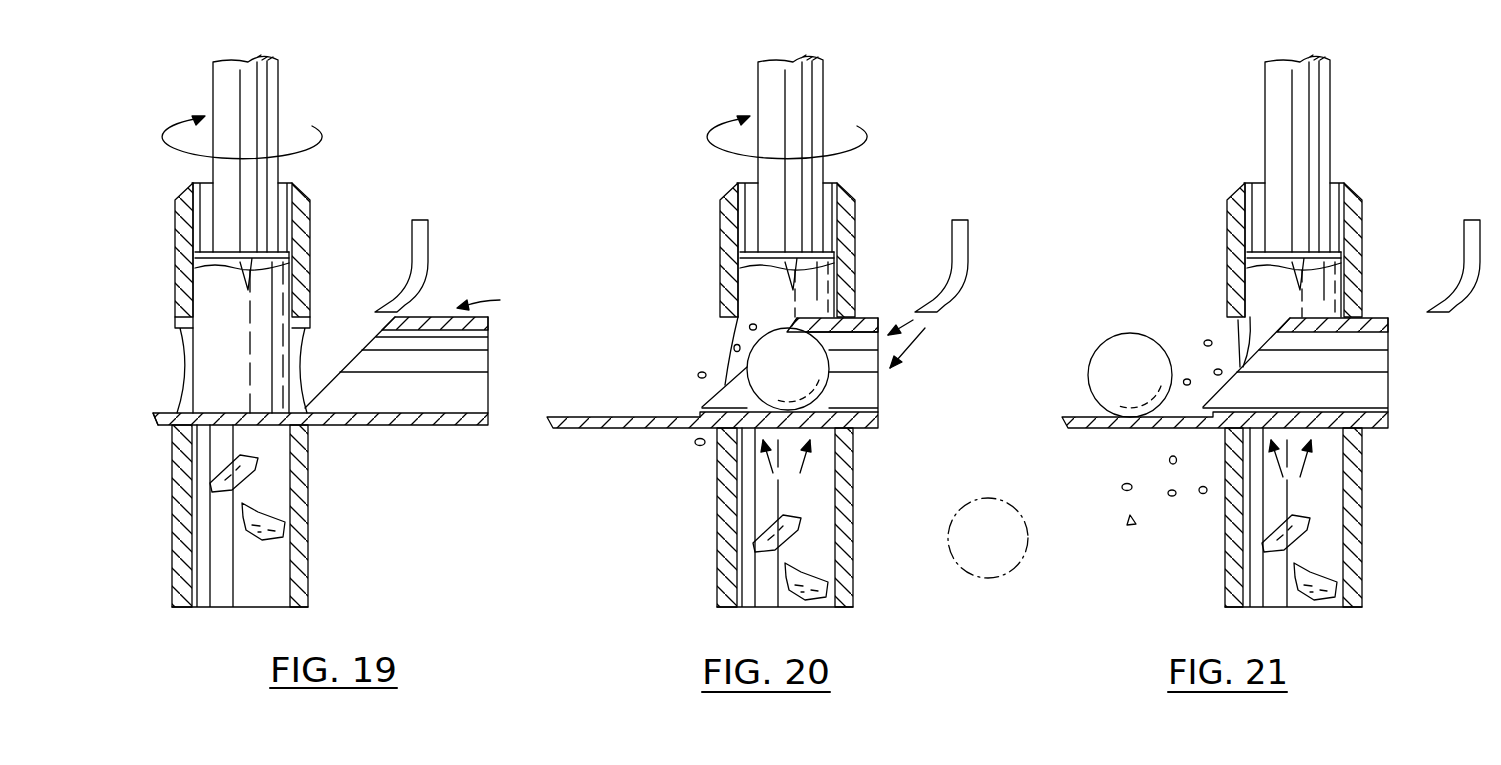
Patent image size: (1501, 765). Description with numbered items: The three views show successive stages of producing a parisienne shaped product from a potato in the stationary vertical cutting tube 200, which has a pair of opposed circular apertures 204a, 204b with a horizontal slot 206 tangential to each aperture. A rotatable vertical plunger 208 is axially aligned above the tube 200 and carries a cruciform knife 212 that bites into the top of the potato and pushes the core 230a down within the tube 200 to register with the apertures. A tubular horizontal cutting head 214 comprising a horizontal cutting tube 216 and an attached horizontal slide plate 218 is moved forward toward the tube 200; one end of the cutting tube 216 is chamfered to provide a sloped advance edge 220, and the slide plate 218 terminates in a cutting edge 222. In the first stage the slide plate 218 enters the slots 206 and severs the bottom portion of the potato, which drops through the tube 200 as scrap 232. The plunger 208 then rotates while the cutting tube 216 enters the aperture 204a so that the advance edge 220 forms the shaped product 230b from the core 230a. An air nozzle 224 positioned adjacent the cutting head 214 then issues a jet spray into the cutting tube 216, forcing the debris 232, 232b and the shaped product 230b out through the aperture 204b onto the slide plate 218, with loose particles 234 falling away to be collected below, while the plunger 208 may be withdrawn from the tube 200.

In FIG. 19, the stationary vertical cutting tube 200 is at (182, 530).
In FIG. 20, the stationary vertical cutting tube 200 is at (741, 517).
In FIG. 21, the stationary vertical cutting tube 200 is at (1332, 517).
In FIG. 19, the aperture 204a is at (306, 318).
In FIG. 19, the aperture 204b is at (176, 337).
In FIG. 20, the aperture 204b is at (680, 337).
In FIG. 21, the aperture 204b is at (1201, 328).
In FIG. 20, the horizontal slot 206 is at (786, 475).
In FIG. 21, the horizontal slot 206 is at (1291, 475).
In FIG. 19, the rotatable vertical plunger 208 is at (273, 93).
In FIG. 20, the rotatable vertical plunger 208 is at (810, 153).
In FIG. 21, the rotatable vertical plunger 208 is at (1341, 153).
In FIG. 19, the cruciform knife 212 is at (215, 280).
In FIG. 20, the cruciform knife 212 is at (730, 326).
In FIG. 21, the cruciform knife 212 is at (1246, 271).
In FIG. 19, the horizontal cutting head 214 is at (503, 300).
In FIG. 19, the horizontal cutting tube 216 is at (427, 393).
In FIG. 20, the horizontal cutting tube 216 is at (833, 371).
In FIG. 21, the horizontal cutting tube 216 is at (1333, 365).
In FIG. 19, the slide plate 218 is at (297, 430).
In FIG. 20, the slide plate 218 is at (709, 399).
In FIG. 21, the slide plate 218 is at (1197, 399).
In FIG. 19, the sloped advance edge 220 is at (353, 363).
In FIG. 20, the sloped advance edge 220 is at (724, 387).
In FIG. 21, the sloped advance edge 220 is at (1231, 362).
In FIG. 19, the cutting edge 222 is at (153, 417).
In FIG. 19, the air nozzle 224 is at (430, 243).
In FIG. 20, the air nozzle 224 is at (986, 264).
In FIG. 21, the air nozzle 224 is at (1435, 258).
In FIG. 19, the core 230a is at (217, 372).
In FIG. 20, the core 230a is at (864, 279).
In FIG. 21, the core 230a is at (1372, 286).
In FIG. 20, the shaped product 230b is at (866, 460).
In FIG. 21, the shaped product 230b is at (1095, 372).
In FIG. 19, the scrap 232 is at (283, 527).
In FIG. 20, the scrap 232 is at (838, 560).
In FIG. 21, the debris 232b is at (1357, 558).
In FIG. 20, the particles 234 is at (672, 399).
In FIG. 21, the particles 234 is at (1136, 432).